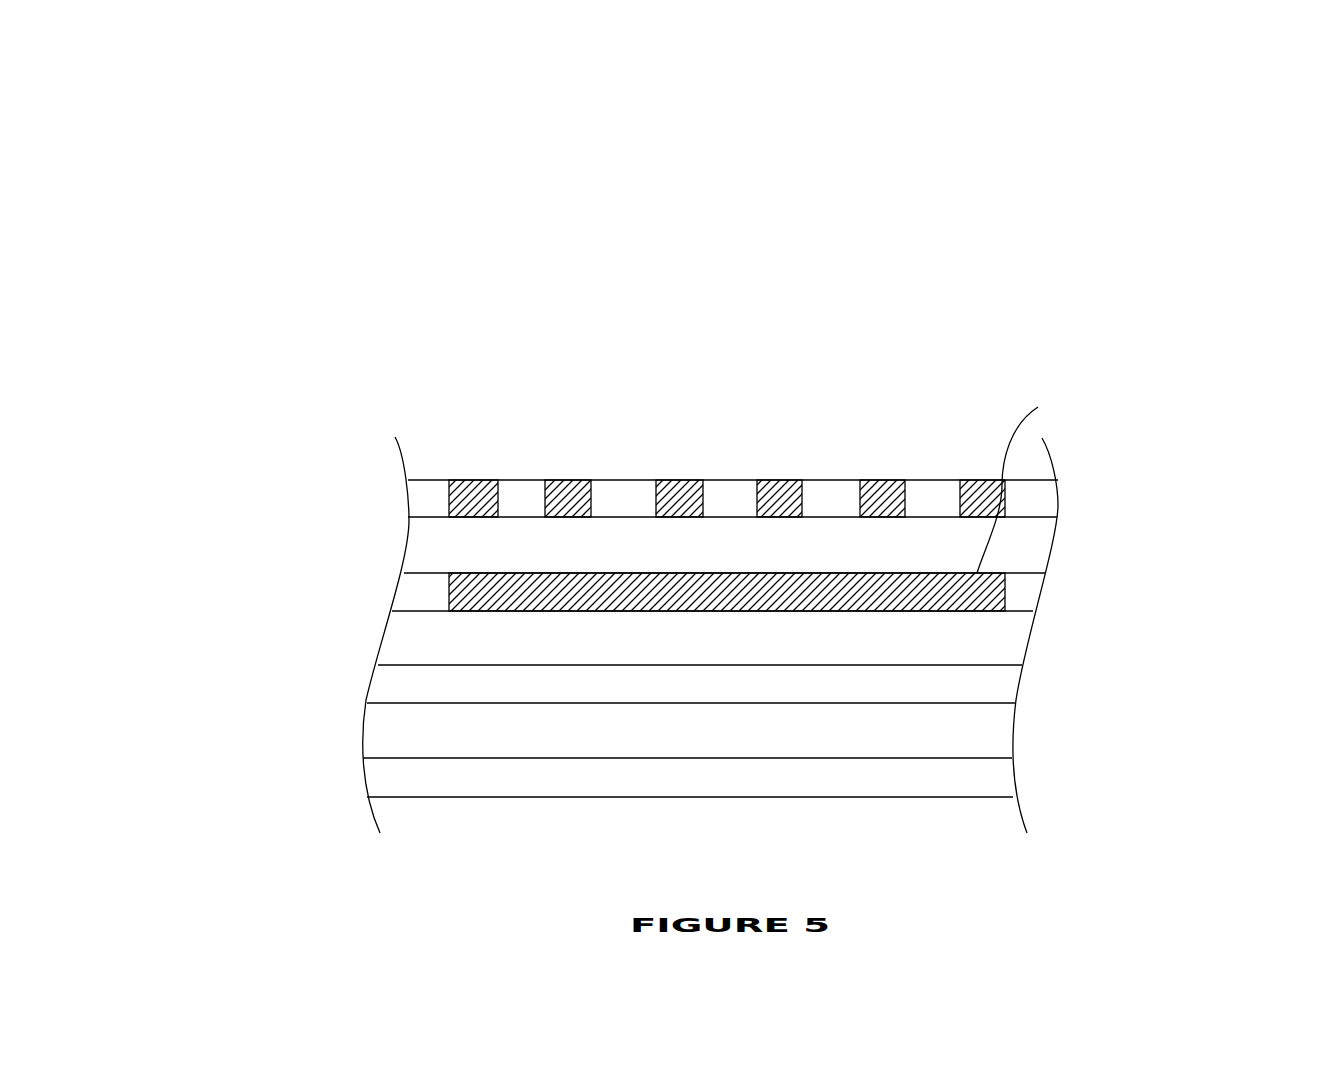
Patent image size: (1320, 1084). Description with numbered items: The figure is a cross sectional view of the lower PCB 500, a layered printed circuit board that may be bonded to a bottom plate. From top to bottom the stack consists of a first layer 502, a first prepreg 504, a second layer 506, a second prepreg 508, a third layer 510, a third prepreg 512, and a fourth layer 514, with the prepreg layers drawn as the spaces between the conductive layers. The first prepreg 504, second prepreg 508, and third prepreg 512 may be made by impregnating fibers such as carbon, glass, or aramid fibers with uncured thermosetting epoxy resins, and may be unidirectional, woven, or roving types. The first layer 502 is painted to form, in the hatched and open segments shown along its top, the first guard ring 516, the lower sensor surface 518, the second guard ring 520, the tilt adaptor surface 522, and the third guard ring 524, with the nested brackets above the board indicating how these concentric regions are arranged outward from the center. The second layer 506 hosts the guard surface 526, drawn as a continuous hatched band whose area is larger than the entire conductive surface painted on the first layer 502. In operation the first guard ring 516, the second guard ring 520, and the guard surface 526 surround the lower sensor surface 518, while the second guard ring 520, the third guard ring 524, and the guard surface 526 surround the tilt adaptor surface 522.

The lower PCB 500 is at (341, 457).
The layer 1 502 is at (1040, 497).
The prepreg 1 504 is at (1028, 543).
The layer 2 506 is at (1222, 607).
The prepreg 2 508 is at (1010, 636).
The layer 3 510 is at (997, 691).
The prepreg 3 512 is at (995, 735).
The layer 4 514 is at (995, 776).
The guard ring 1 516 is at (777, 480).
The lower sensor surface 518 is at (830, 489).
The guard ring 2 520 is at (880, 480).
The tilt adaptor surface 522 is at (933, 489).
The guard ring 3 524 is at (985, 480).
The guard surface 526 is at (1129, 484).